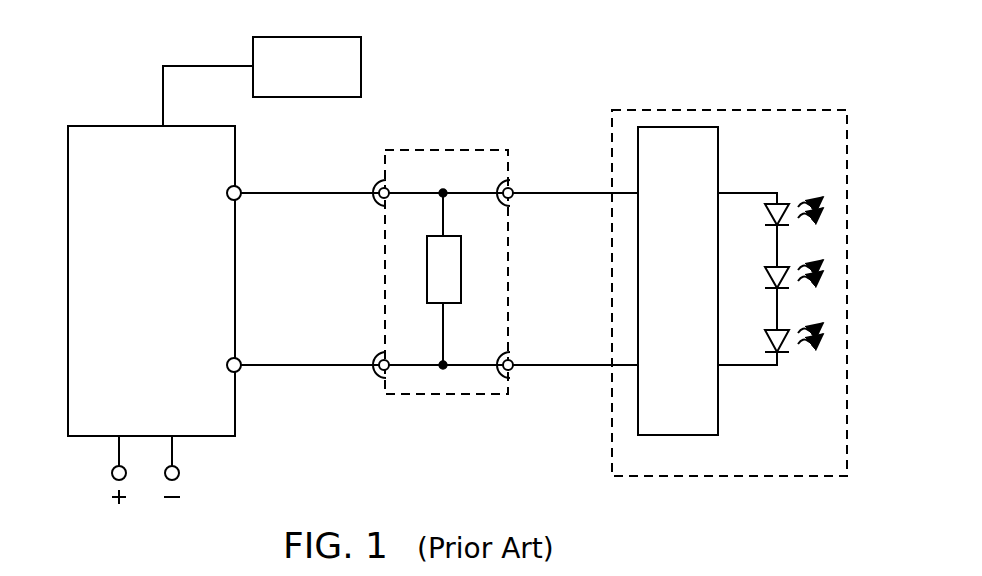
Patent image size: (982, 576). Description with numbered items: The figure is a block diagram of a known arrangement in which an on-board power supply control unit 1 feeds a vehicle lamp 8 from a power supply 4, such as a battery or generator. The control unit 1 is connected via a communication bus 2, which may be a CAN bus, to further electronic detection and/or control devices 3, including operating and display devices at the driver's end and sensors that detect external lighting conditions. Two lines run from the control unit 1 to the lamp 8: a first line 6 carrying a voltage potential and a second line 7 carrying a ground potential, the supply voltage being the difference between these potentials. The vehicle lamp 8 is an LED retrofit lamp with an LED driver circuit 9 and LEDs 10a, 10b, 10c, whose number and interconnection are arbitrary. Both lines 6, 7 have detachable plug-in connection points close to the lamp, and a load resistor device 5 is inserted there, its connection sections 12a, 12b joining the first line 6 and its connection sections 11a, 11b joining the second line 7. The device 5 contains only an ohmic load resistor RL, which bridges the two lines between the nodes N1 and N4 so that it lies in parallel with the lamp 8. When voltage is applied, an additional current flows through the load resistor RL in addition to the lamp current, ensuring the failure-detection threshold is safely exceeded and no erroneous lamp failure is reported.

The on-board power supply control unit 1 is at (133, 283).
The communication bus 2 is at (195, 64).
The electronic detection and/or control devices 3 is at (291, 81).
The power supply 4 is at (96, 468).
The load resistor device 5 is at (383, 163).
The first line 6 is at (325, 194).
The second line 7 is at (315, 368).
The vehicle lamp 8 is at (724, 109).
The LED driver circuit 9 is at (668, 283).
The LED 10a is at (832, 213).
The LED 10b is at (832, 278).
The LED 10c is at (832, 347).
The connection section 11a is at (492, 375).
The connection section 11b is at (390, 373).
The connection section 12a is at (503, 182).
The connection section 12b is at (392, 186).
The first node N1 is at (445, 190).
The fourth node N4 is at (439, 395).
The load resistor RL is at (461, 269).